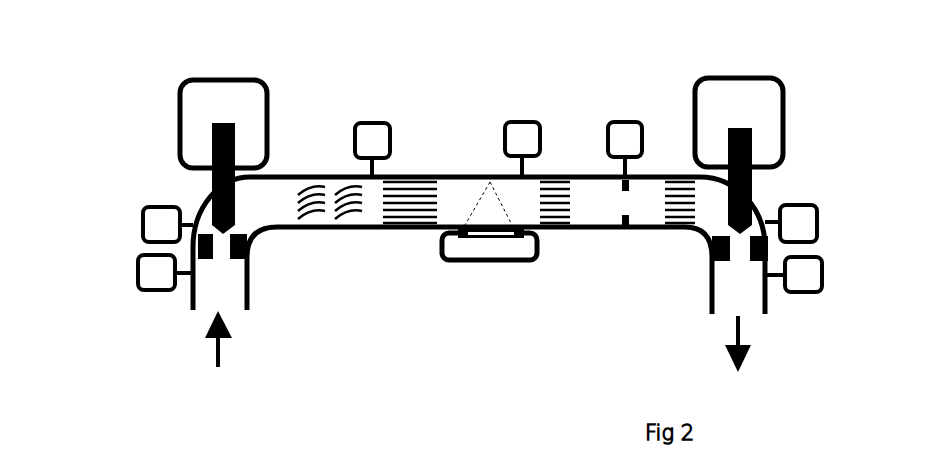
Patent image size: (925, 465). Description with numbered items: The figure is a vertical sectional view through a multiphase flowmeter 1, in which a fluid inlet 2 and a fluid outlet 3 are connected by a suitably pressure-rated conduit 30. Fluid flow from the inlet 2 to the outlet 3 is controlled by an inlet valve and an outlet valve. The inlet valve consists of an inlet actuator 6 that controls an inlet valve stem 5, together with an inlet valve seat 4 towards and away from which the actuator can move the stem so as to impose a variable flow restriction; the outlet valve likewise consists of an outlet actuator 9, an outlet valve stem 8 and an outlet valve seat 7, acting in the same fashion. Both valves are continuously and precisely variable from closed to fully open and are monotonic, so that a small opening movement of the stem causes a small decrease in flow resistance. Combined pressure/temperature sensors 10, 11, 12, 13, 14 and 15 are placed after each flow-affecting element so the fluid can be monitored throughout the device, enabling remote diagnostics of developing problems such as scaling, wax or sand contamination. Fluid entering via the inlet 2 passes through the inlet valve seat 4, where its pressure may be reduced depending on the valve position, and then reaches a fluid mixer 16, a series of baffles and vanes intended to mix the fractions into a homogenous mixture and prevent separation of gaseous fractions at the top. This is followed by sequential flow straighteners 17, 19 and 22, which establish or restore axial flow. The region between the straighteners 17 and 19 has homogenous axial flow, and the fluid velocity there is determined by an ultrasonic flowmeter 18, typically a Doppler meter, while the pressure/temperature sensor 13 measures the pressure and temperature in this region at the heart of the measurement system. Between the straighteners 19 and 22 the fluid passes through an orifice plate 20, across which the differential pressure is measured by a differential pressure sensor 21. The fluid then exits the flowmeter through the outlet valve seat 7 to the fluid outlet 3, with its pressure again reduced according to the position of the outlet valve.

The multiphase flowmeter 1 is at (263, 237).
The fluid inlet 2 is at (215, 302).
The fluid outlet 3 is at (753, 320).
The inlet valve seat 4 is at (223, 252).
The inlet valve stem 5 is at (205, 210).
The inlet actuator 6 is at (215, 82).
The outlet valve seat 7 is at (733, 257).
The outlet valve stem 8 is at (735, 227).
The outlet actuator 9 is at (752, 78).
The combined pressure/temperature sensor 10 is at (138, 277).
The combined pressure/temperature sensor 11 is at (142, 218).
The combined pressure/temperature sensor 12 is at (368, 123).
The combined pressure/temperature sensor 13 is at (513, 121).
The combined pressure/temperature sensor 14 is at (812, 205).
The combined pressure/temperature sensor 15 is at (822, 270).
The fluid mixer 16 is at (333, 192).
The flow straightener 17 is at (427, 193).
The ultrasonic flowmeter 18 is at (487, 260).
The flow straightener 19 is at (555, 182).
The orifice plate 20 is at (625, 207).
The differential pressure sensor 21 is at (628, 120).
The flow straightener 22 is at (680, 192).
The conduit 30 is at (450, 178).